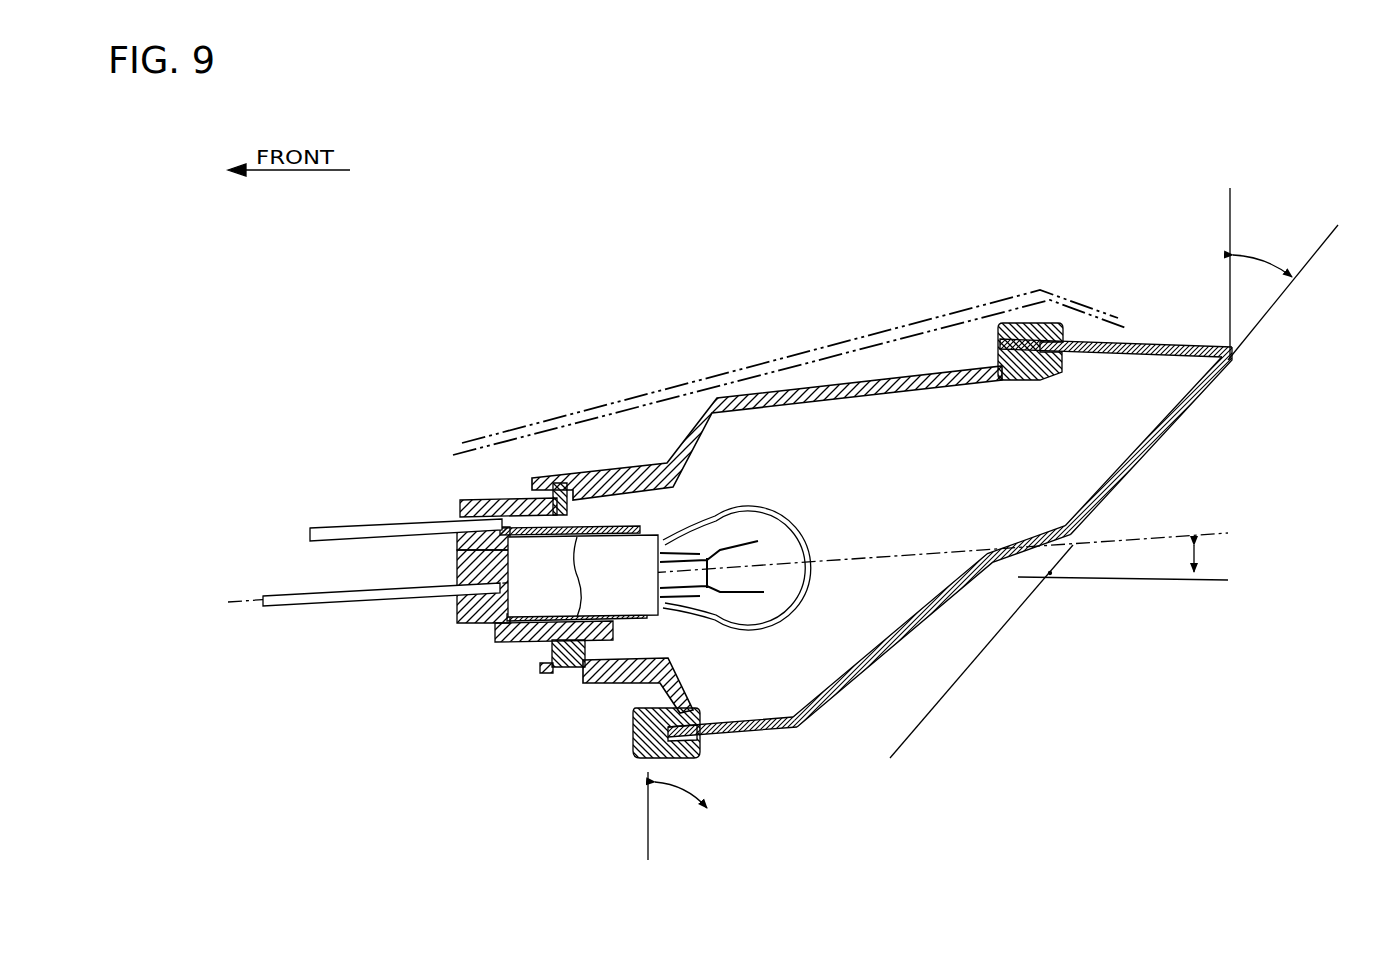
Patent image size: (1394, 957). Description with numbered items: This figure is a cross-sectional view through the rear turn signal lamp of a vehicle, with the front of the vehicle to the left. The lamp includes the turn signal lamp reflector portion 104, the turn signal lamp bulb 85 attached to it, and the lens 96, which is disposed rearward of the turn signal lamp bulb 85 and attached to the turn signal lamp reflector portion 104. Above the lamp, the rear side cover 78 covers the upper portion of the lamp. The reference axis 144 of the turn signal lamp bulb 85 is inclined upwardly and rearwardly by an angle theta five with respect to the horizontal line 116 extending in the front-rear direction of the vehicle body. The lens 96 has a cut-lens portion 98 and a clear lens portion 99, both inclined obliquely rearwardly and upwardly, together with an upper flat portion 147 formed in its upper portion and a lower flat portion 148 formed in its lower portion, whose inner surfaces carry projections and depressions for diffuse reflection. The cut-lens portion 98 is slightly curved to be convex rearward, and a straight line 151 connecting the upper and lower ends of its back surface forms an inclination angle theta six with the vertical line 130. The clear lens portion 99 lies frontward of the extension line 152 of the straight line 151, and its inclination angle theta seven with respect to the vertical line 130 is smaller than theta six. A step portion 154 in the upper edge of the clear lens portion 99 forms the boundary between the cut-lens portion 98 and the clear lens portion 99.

The rear side cover 78 is at (888, 306).
The turn signal lamp bulb 85 is at (727, 496).
The turn signal lamp reflector portion 104 is at (772, 395).
The upper flat portion 147 is at (1158, 339).
The vertical line 130 is at (1230, 218).
The straight line 151 is at (1313, 255).
The cut-lens portion 98 is at (1185, 427).
The lens 96 is at (958, 540).
The step portion 154 is at (1037, 550).
The horizontal line 116 is at (1212, 580).
The reference axis 144 is at (237, 603).
The clear lens portion 99 is at (878, 660).
The extension line 152 is at (903, 743).
The lower flat portion 148 is at (783, 730).